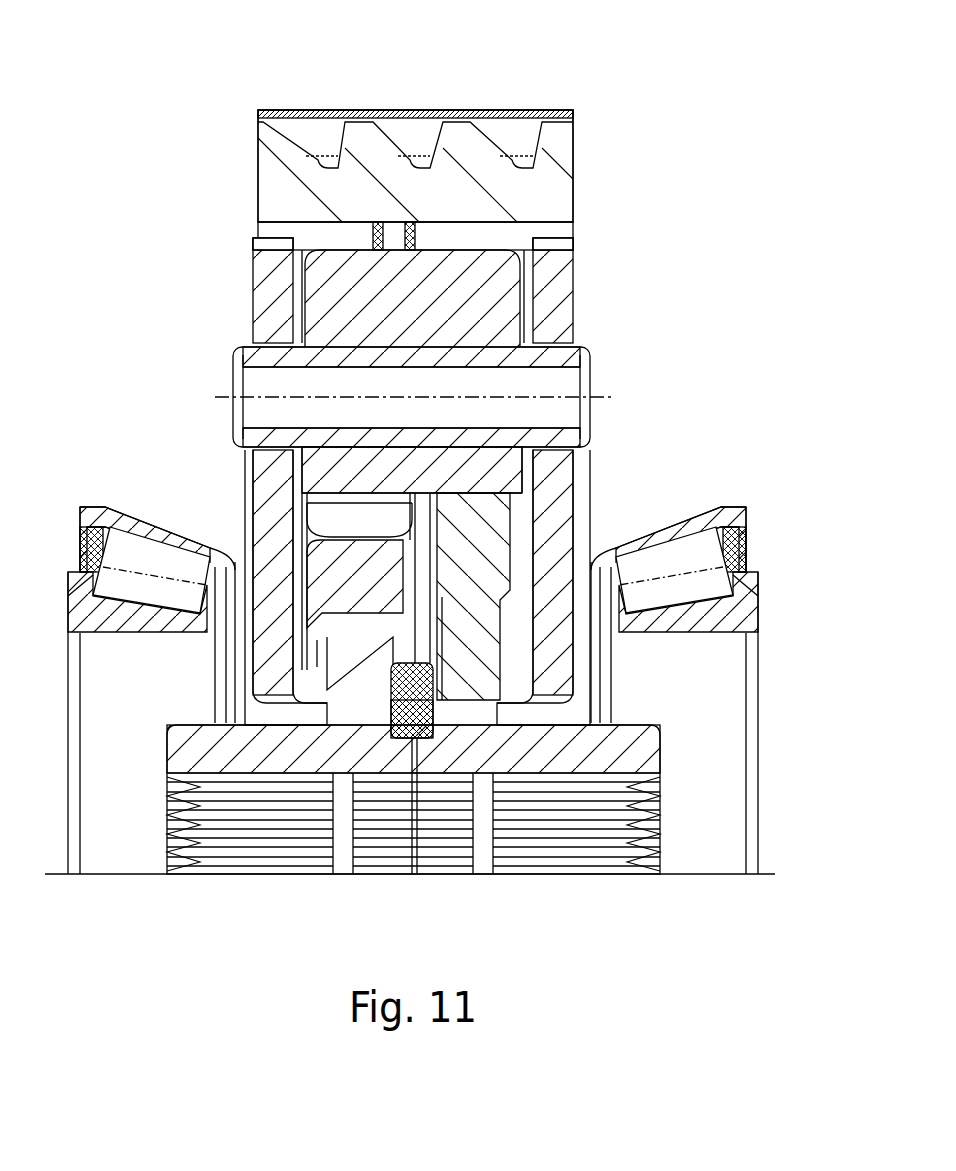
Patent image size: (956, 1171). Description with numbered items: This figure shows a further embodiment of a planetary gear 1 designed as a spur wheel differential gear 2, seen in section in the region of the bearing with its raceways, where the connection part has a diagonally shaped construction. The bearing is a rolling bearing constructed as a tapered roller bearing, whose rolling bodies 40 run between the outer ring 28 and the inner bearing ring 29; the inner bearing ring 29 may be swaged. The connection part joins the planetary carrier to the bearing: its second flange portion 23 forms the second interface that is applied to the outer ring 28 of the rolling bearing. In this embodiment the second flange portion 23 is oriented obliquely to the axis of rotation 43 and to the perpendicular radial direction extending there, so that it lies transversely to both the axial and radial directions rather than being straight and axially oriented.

The planetary gear 1 is at (593, 88).
The spur wheel differential gear 2 is at (415, 166).
The second flange portion 23 is at (649, 536).
The outer ring 28 is at (748, 512).
The rolling bodies 40 is at (742, 587).
The inner bearing ring 29 is at (742, 614).
The axis of rotation 43 is at (713, 875).